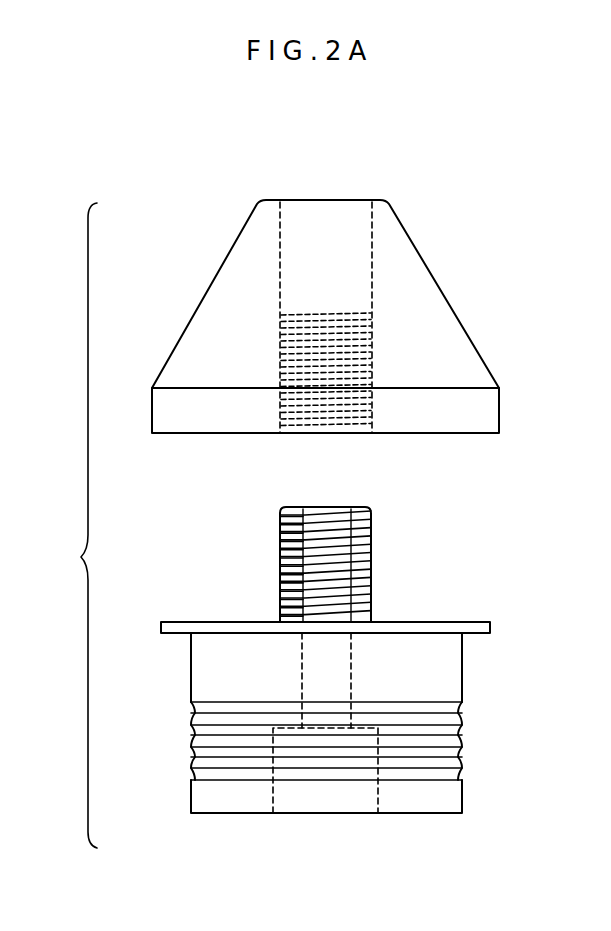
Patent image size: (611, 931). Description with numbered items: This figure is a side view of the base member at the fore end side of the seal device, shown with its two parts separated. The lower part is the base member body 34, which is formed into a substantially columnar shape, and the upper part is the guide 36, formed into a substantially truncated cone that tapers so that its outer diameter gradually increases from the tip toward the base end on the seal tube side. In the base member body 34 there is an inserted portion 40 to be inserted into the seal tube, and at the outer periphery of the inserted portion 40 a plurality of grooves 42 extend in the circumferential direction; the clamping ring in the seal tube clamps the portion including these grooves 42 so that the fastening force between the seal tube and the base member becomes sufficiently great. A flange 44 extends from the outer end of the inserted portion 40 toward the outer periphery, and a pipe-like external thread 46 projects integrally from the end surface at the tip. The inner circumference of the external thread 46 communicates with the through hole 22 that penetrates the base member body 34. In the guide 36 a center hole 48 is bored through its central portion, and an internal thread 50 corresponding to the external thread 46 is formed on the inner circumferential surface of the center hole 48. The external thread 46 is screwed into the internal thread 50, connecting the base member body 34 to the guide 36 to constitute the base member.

The through hole 22 is at (302, 679).
The base member body 34 is at (507, 737).
The guide 36 is at (390, 203).
The inserted portion 40 is at (191, 672).
The grooves 42 is at (191, 729).
The flange 44 is at (490, 628).
The external thread 46 is at (371, 539).
The center hole 48 is at (281, 263).
The internal thread 50 is at (310, 408).